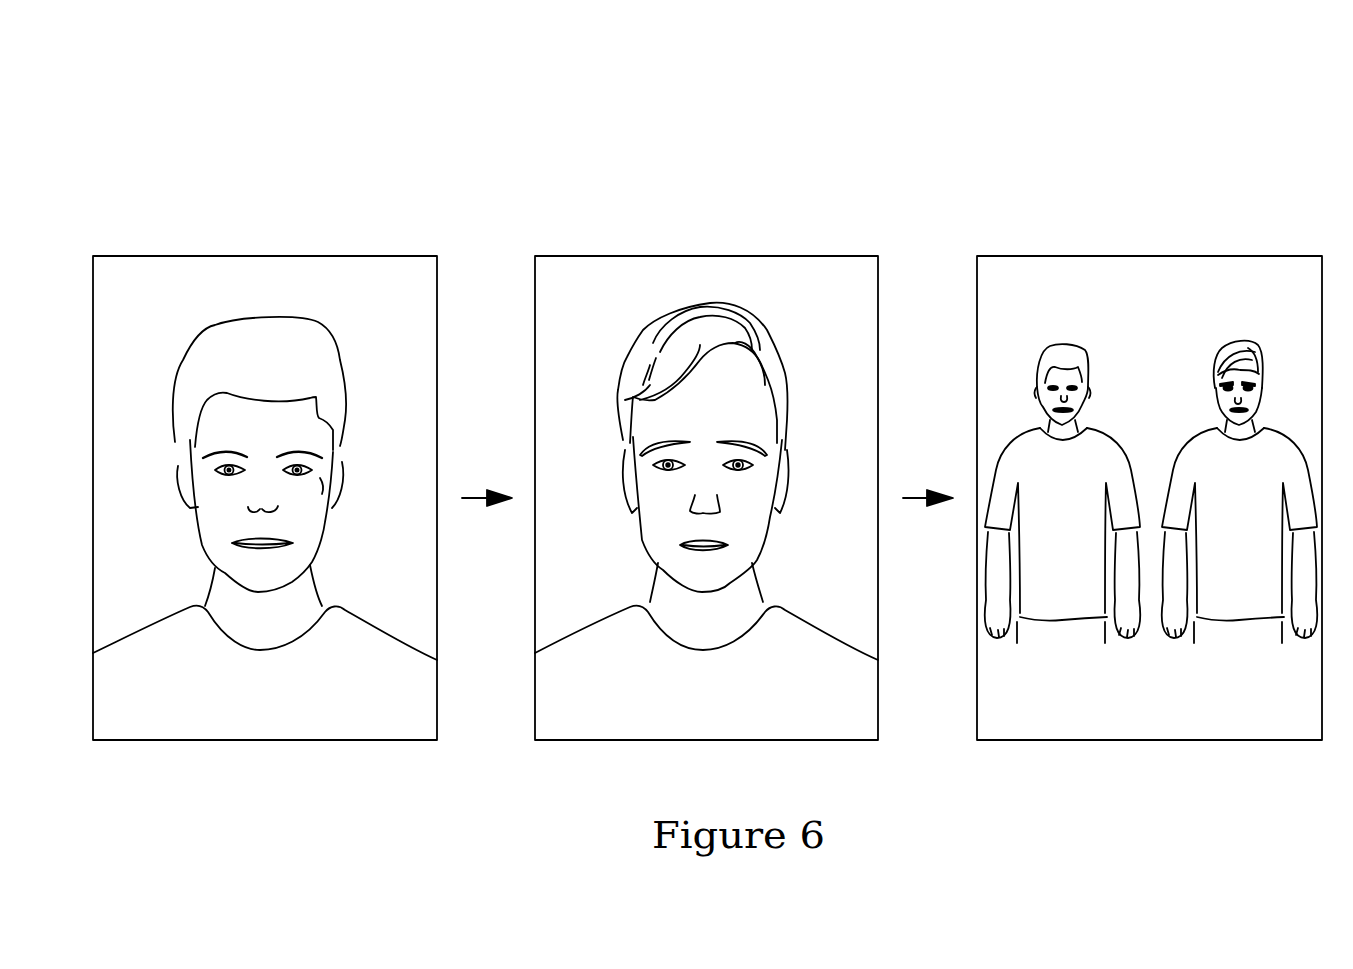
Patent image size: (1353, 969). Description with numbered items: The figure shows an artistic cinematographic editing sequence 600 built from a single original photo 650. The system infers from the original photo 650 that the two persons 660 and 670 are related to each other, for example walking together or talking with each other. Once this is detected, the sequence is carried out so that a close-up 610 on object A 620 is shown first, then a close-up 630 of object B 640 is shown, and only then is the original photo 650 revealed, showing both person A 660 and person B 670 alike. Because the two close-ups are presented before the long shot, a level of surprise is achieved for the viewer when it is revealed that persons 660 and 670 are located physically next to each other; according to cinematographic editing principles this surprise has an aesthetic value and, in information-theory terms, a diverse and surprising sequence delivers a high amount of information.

The image processing example 600 is at (155, 100).
The close-up on object A 610 is at (113, 255).
The object A 620 is at (217, 327).
The close-up image of object B 630 is at (555, 255).
The object B (second person) 640 is at (648, 323).
The original photo 650 is at (990, 255).
The person A 660 is at (1040, 362).
The person B 670 is at (1215, 360).